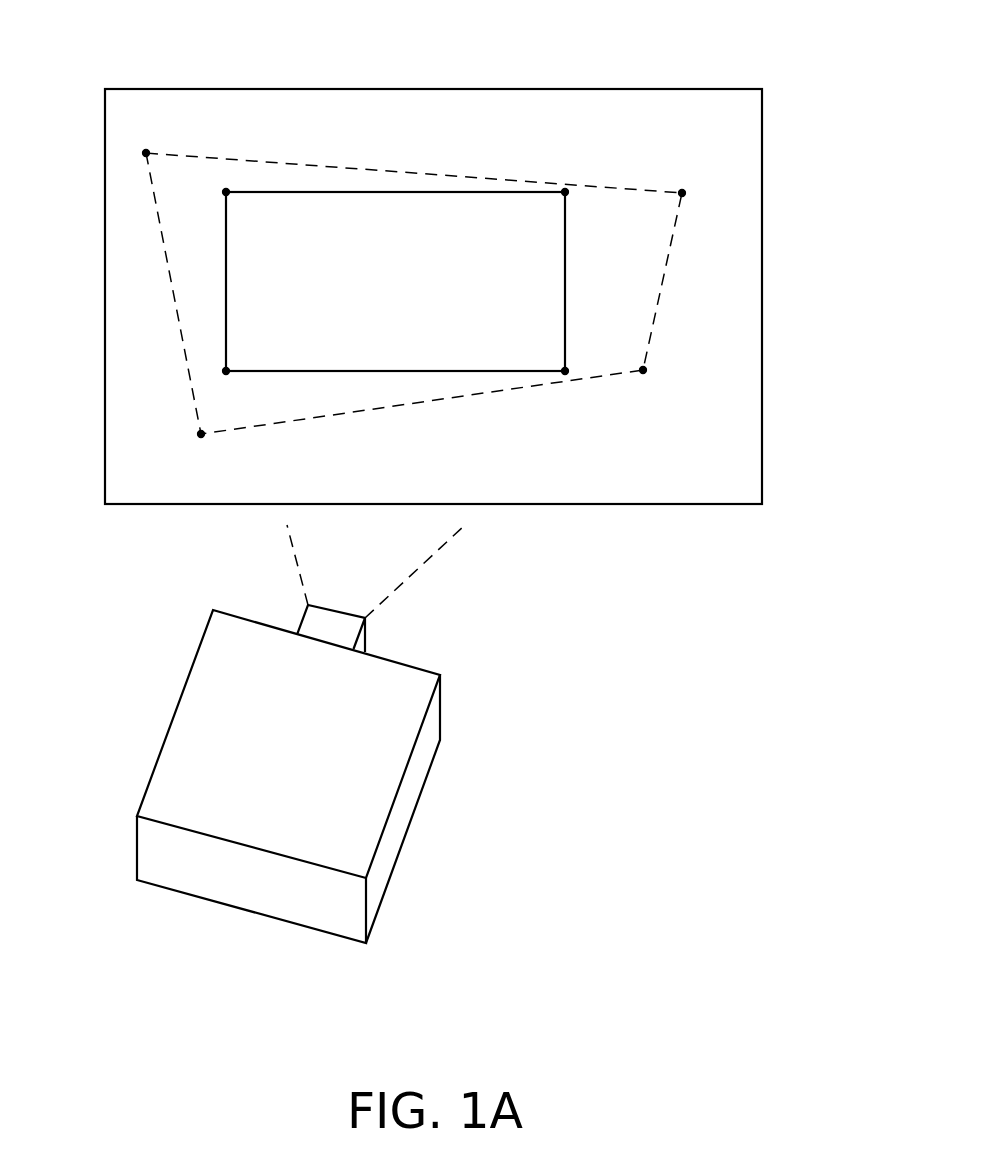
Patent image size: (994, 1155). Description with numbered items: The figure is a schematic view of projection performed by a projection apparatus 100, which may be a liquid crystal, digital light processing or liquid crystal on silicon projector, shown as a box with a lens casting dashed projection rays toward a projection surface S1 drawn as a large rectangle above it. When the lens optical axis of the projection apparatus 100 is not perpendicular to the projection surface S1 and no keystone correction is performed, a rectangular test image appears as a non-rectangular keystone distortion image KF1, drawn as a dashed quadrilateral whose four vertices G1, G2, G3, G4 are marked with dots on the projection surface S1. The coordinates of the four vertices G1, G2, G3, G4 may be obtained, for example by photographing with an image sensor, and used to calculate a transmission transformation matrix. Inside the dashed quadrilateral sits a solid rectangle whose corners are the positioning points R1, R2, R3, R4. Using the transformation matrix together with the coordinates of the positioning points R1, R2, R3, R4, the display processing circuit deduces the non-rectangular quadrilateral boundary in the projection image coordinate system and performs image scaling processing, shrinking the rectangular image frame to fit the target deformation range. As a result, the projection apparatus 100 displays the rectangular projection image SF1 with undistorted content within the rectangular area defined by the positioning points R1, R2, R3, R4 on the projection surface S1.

The projection apparatus 100 is at (174, 712).
The projection surface S1 is at (700, 137).
The rectangular projection image SF1 is at (285, 192).
The keystone distortion image KF1 is at (655, 313).
The first vertex of the keystone distortion image G1 is at (146, 153).
The second vertex of the keystone distortion image G2 is at (682, 193).
The third vertex of the keystone distortion image G3 is at (643, 370).
The fourth vertex of the keystone distortion image G4 is at (201, 434).
The first positioning point R1 is at (226, 192).
The second positioning point R2 is at (565, 192).
The third positioning point R3 is at (565, 371).
The fourth positioning point R4 is at (226, 371).